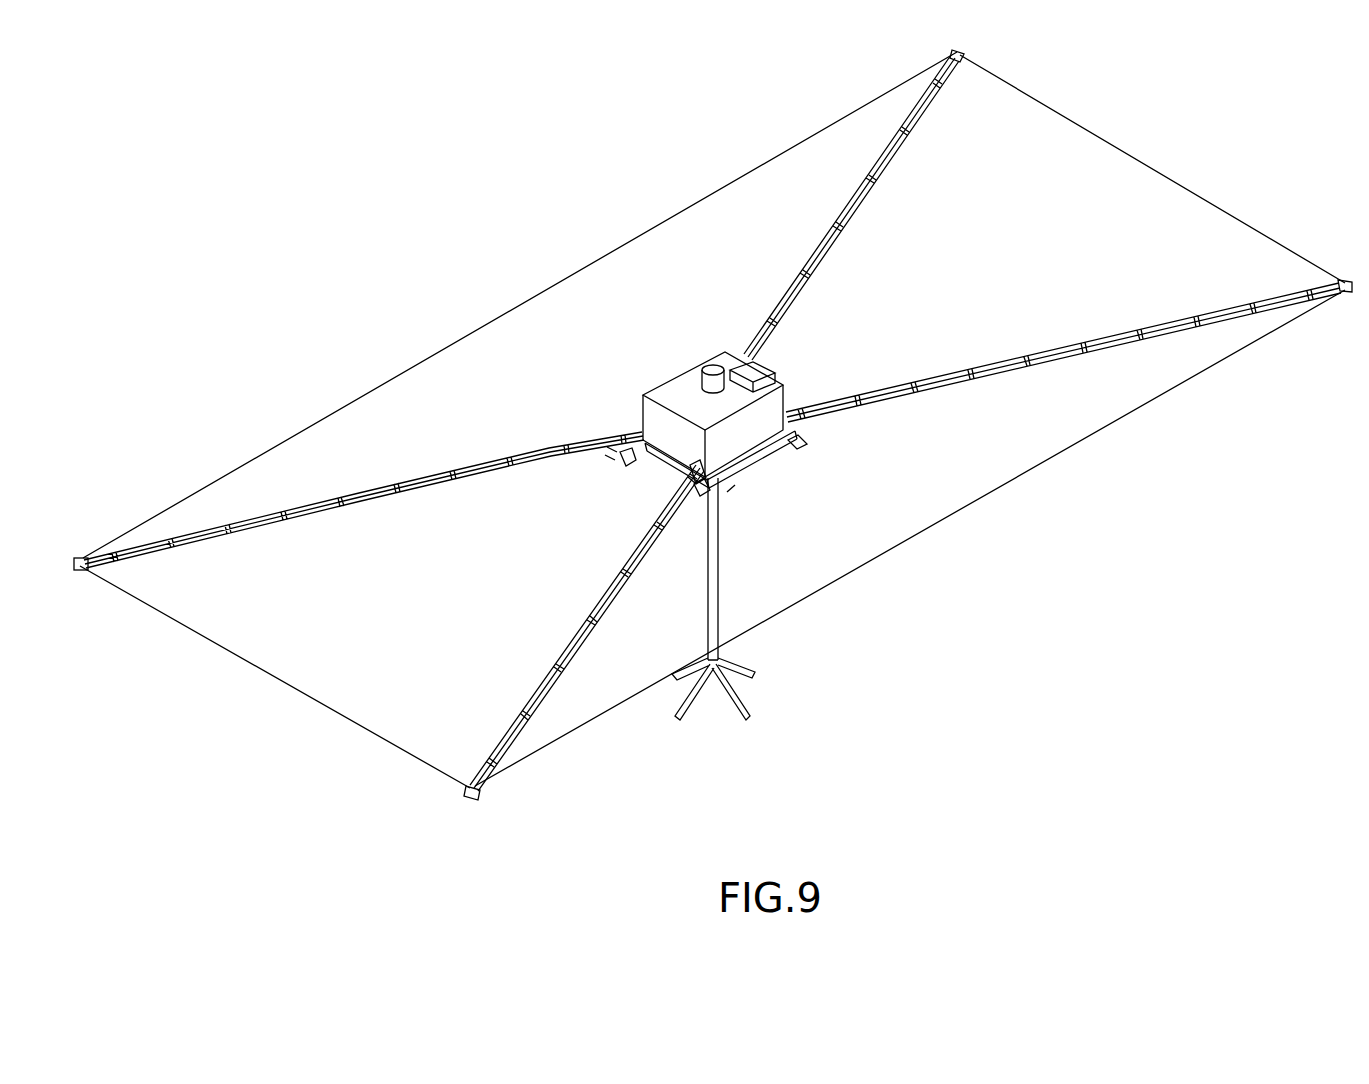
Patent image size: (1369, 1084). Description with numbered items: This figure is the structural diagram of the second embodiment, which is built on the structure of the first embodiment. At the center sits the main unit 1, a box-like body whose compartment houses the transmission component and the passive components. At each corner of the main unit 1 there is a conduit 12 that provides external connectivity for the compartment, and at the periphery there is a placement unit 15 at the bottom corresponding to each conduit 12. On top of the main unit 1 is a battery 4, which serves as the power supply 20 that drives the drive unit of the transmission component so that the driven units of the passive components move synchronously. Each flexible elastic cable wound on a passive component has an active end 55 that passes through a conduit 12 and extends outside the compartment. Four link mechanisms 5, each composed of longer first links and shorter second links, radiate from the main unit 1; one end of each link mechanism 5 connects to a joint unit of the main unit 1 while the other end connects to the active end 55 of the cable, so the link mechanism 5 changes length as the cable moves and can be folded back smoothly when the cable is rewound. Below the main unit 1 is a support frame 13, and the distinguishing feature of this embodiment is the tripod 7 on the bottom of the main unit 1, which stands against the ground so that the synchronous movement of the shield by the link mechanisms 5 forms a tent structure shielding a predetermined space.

The main unit 1 is at (757, 437).
The battery 4 is at (768, 368).
The link mechanism 5 is at (497, 452).
The tripod 7 is at (715, 604).
The conduit 12 is at (628, 462).
The support frame 13 is at (632, 470).
The placement unit 15 is at (608, 455).
The power supply 20 is at (708, 366).
The active end 55 is at (82, 558).